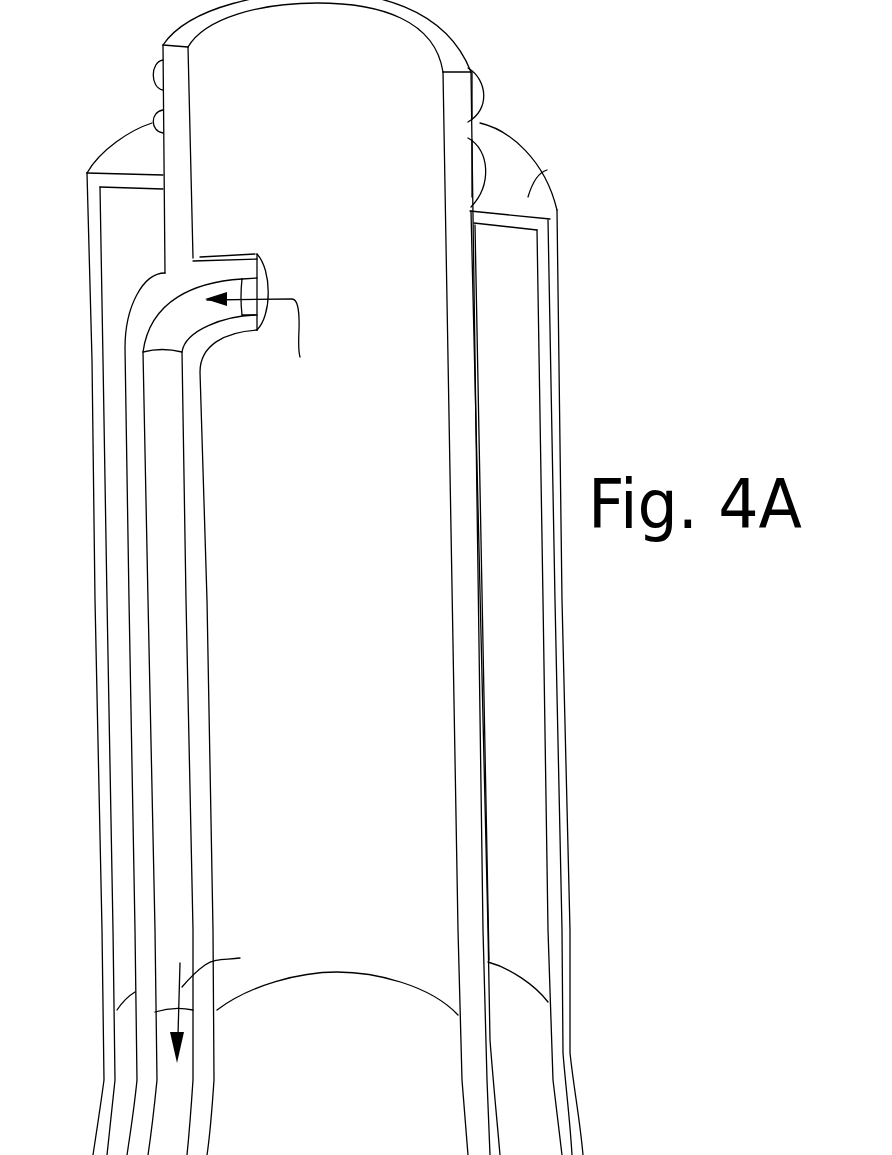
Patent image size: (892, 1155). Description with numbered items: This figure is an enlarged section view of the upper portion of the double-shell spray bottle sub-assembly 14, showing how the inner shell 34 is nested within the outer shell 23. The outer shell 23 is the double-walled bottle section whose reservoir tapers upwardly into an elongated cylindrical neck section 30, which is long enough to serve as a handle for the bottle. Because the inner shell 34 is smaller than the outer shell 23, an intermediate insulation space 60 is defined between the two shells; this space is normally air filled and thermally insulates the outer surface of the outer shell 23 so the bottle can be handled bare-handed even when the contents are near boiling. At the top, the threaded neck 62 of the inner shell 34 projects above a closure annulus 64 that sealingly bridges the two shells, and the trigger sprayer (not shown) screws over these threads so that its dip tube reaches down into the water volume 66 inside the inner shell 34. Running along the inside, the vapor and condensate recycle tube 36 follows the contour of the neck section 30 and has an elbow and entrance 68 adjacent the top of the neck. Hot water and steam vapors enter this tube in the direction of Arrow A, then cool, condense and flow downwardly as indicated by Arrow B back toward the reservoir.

The bottle assembly 14 is at (630, 362).
The outer shell 23 is at (580, 945).
The neck section 30 is at (567, 642).
The inner shell 34 is at (478, 912).
The recycle tube 36 is at (160, 537).
The insulation space 60 is at (518, 783).
The threaded neck 62 is at (480, 112).
The closure annulus 64 is at (547, 170).
The water volume 66 is at (362, 1082).
The elbow and entrance 68 is at (262, 287).